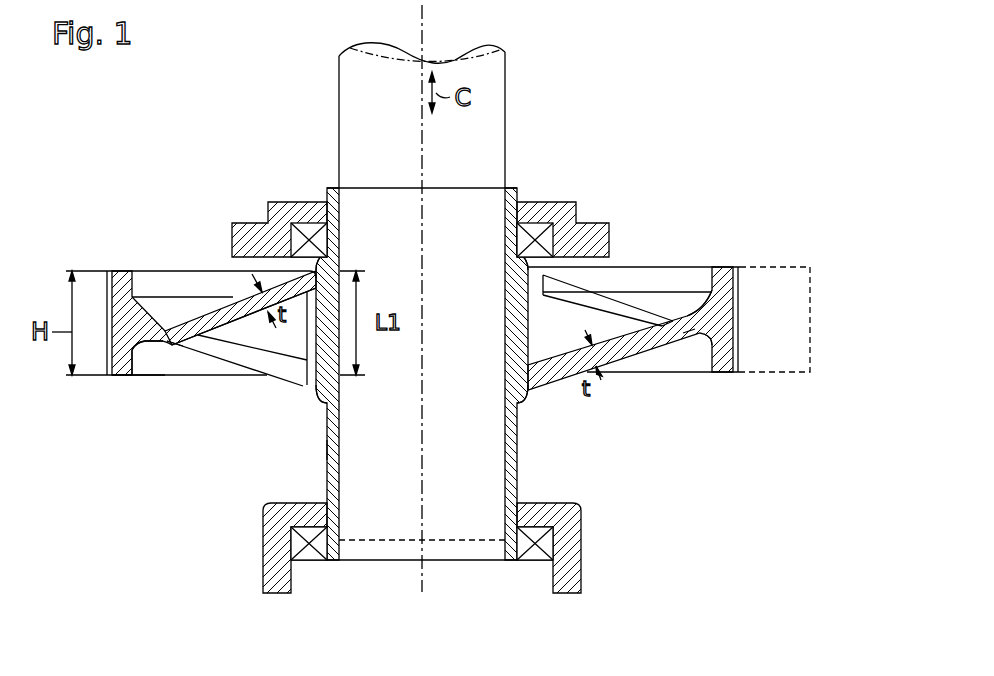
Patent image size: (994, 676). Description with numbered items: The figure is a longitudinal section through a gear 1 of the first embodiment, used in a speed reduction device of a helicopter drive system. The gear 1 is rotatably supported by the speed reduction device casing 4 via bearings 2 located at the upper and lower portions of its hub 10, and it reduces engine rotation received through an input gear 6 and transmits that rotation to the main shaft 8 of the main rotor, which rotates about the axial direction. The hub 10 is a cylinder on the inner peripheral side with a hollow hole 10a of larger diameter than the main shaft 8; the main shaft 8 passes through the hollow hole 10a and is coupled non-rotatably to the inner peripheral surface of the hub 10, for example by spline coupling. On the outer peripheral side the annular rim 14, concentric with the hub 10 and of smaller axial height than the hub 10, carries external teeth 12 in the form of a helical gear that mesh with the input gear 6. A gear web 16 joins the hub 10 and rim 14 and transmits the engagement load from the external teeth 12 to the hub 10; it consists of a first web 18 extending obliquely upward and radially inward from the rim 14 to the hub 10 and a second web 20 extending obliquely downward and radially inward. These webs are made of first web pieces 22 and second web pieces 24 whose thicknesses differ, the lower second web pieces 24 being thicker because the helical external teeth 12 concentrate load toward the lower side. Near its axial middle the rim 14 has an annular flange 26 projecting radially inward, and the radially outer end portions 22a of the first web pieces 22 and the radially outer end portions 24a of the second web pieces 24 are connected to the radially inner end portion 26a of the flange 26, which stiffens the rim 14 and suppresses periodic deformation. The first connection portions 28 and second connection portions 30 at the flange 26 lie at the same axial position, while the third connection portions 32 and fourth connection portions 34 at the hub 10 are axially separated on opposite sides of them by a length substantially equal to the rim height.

The gear 1 is at (421, 359).
The bearings 2 is at (307, 223).
The speed reduction device casing 4 is at (267, 201).
The input gear 6 is at (790, 267).
The main shaft 8 is at (507, 74).
The hub 10 is at (426, 359).
The hollow hole 10a is at (327, 458).
The external teeth 12 is at (105, 277).
The rim 14 is at (414, 315).
The gear web 16 is at (244, 316).
The first web 18 is at (230, 297).
The second web 20 is at (627, 362).
The first web pieces 22 is at (597, 292).
The radially outer end portions of the first web pieces 22a is at (173, 322).
The second web pieces 24 is at (224, 358).
The radially outer end portions of the second web pieces 24a is at (183, 360).
The annular flange 26 is at (138, 355).
The radially inner end portion 26a is at (166, 382).
The first connection portions 28 is at (152, 330).
The second connection portions 30 is at (150, 352).
The third connection portions 32 is at (333, 263).
The fourth connection portions 34 is at (300, 383).